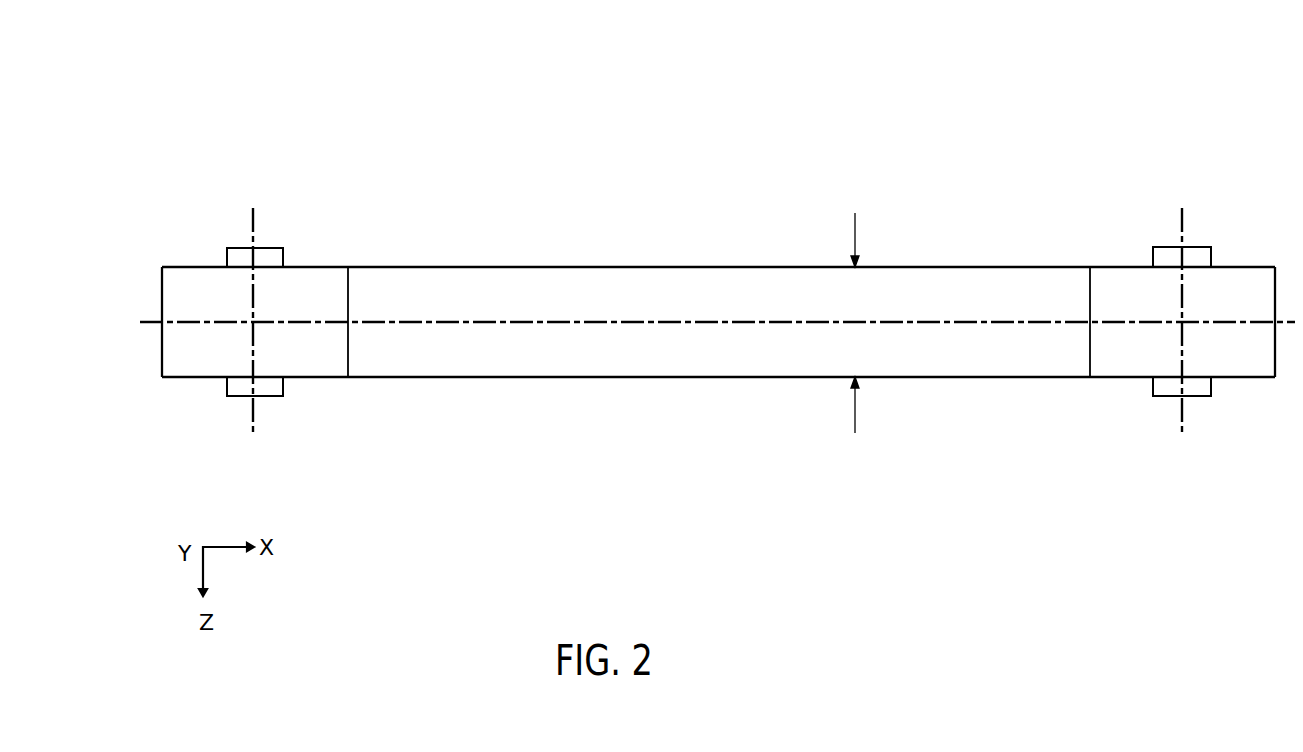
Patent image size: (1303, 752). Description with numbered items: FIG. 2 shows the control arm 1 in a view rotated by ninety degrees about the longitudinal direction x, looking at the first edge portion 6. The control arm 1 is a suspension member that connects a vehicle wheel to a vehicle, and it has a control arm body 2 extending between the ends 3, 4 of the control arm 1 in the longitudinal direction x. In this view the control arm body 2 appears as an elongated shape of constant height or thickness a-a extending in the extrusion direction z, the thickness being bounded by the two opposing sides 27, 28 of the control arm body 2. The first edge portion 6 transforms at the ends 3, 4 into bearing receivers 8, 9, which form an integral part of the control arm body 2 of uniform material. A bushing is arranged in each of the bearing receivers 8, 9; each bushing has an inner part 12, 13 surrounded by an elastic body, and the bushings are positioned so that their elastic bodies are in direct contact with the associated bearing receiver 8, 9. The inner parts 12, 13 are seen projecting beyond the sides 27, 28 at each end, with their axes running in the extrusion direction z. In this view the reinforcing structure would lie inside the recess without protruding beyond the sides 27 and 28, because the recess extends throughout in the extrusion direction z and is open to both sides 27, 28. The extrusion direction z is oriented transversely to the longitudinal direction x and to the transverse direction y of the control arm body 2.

The control arm 1 is at (703, 168).
The control arm body 2 is at (448, 290).
The end 3 is at (300, 413).
The end 4 is at (1168, 220).
The first edge portion 6 is at (672, 360).
The bearing receiver 8 is at (312, 283).
The bearing receiver 9 is at (1122, 358).
The inner part 12 is at (240, 255).
The inner part 13 is at (1192, 258).
The side 27 is at (602, 378).
The side 28 is at (570, 267).
The height or thickness a- a is at (857, 307).